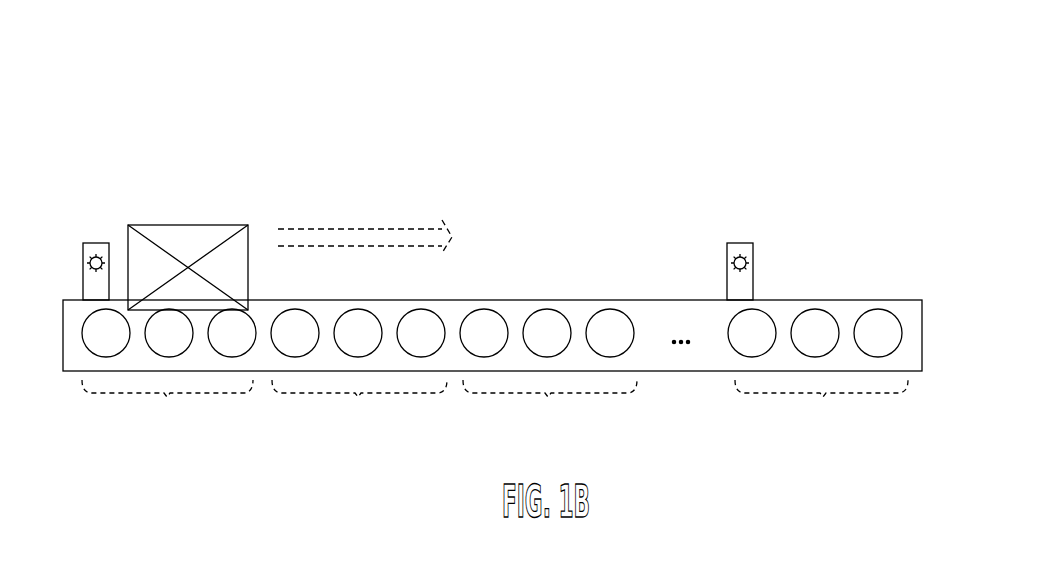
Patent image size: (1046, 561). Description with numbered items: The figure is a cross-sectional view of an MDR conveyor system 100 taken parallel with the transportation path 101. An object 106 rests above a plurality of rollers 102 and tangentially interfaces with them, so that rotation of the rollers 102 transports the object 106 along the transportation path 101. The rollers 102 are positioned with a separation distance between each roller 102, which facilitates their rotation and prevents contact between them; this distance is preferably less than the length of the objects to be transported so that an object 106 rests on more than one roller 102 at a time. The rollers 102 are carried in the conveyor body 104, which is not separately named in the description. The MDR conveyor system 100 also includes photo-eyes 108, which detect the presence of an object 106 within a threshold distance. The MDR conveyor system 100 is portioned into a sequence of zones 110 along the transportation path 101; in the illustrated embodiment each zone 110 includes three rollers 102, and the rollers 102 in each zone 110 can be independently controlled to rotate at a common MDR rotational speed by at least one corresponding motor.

The MDR conveyor system 100 is at (876, 87).
The transportation path 101 is at (411, 224).
The rollers 102 is at (488, 324).
The conveyor 104 is at (642, 316).
The object 106 is at (224, 221).
The photo-eyes 108 is at (101, 234).
The zones 110 is at (495, 407).